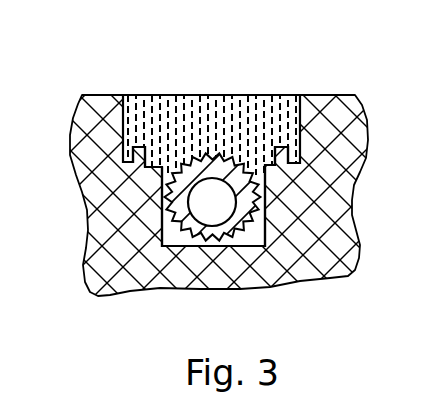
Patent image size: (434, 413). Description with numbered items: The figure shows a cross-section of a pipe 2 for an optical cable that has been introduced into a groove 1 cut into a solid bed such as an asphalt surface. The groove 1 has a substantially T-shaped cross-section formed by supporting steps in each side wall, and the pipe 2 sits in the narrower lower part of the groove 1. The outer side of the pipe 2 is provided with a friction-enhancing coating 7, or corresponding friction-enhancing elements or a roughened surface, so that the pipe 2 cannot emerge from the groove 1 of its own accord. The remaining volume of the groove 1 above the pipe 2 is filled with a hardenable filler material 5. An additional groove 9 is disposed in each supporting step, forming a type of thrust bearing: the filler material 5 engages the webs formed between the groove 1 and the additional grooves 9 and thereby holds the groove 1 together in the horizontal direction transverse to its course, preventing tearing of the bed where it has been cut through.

The groove 1 is at (217, 154).
The hardenable filler material 5 is at (204, 120).
The additional groove 9 is at (123, 160).
The friction-enhancing coating 7 is at (175, 248).
The pipe 2 is at (236, 185).